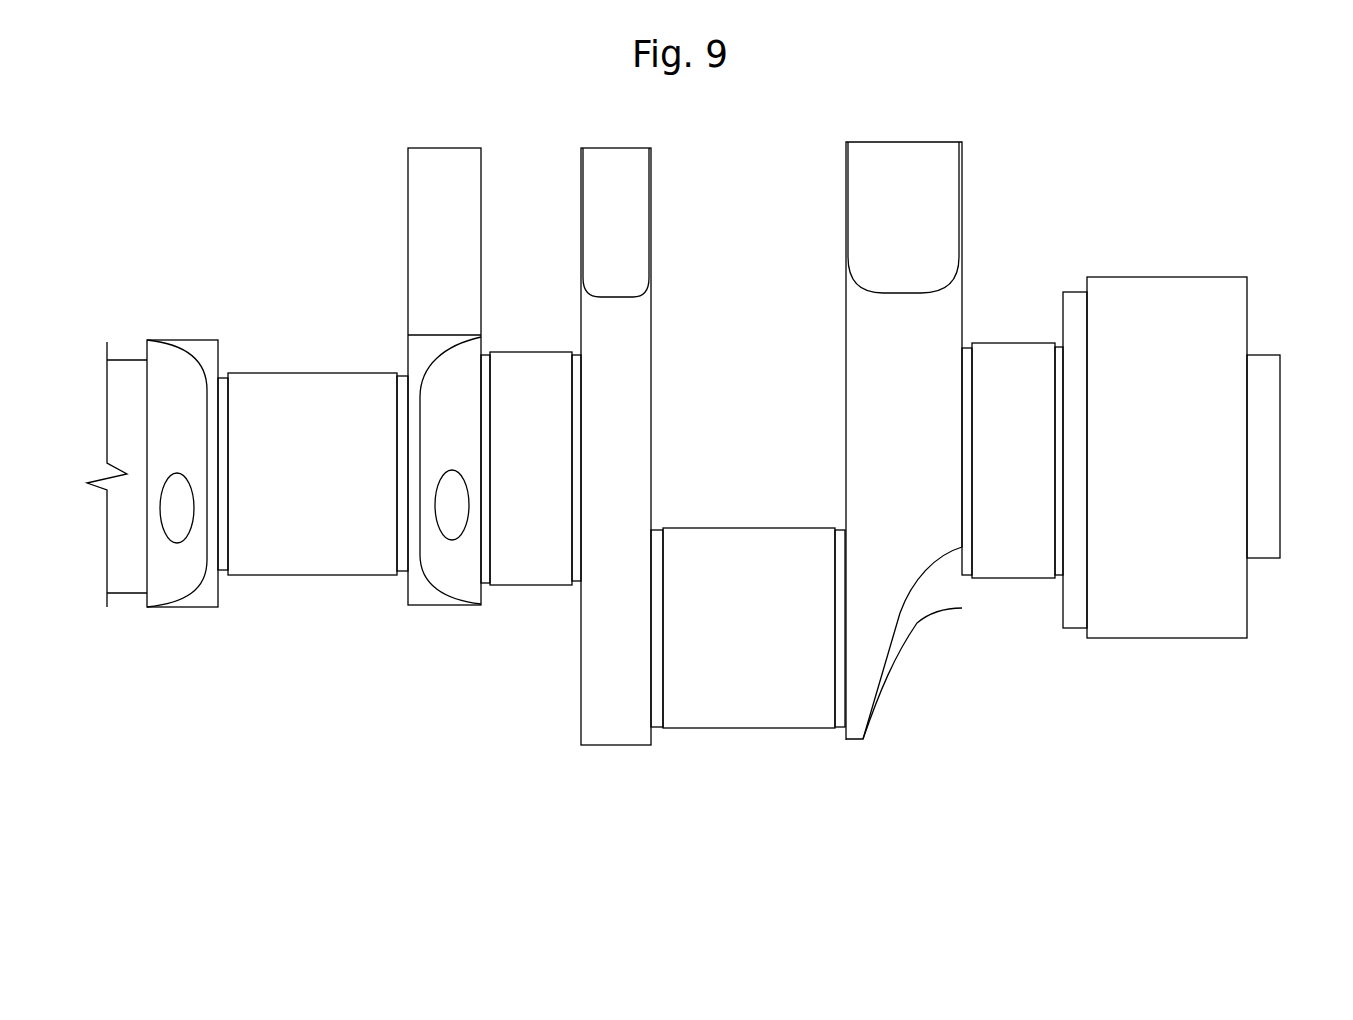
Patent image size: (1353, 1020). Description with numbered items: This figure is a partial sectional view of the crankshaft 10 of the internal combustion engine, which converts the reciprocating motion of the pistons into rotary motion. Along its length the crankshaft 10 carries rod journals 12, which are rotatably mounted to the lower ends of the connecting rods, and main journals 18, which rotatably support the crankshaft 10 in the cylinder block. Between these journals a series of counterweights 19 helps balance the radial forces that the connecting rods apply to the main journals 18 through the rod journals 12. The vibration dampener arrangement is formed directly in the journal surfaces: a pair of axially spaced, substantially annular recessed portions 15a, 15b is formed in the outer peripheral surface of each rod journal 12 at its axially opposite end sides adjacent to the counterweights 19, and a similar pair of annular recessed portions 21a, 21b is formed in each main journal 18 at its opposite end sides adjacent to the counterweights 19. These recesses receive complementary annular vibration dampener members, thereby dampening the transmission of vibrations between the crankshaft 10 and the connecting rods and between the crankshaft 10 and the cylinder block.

The crankshaft 10 is at (1278, 383).
The rod journal 12 is at (305, 378).
The annular recessed portion 15a is at (658, 728).
The annular recessed portion 15b is at (843, 728).
The main journal 18 is at (530, 363).
The counterweight 19 is at (408, 188).
The annular recessed portion 21a is at (223, 574).
The annular recessed portion 21b is at (405, 574).